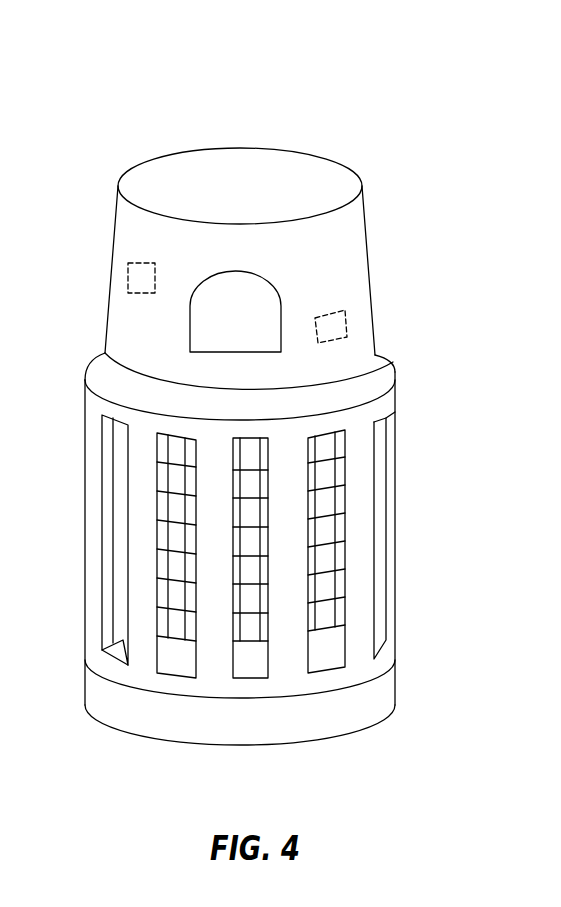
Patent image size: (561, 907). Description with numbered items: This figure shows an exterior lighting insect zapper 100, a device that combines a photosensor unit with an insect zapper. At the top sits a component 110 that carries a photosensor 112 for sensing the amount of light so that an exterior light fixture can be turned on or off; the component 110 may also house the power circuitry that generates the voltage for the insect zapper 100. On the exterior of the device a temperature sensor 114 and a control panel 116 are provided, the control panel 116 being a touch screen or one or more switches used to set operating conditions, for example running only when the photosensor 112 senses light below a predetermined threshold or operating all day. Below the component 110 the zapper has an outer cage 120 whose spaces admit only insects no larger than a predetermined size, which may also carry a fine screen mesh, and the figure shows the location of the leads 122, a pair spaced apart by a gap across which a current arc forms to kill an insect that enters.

The exterior lighting insect zapper 100 is at (118, 48).
The component 110 is at (149, 175).
The photosensor 112 is at (282, 296).
The temperature sensor 114 is at (120, 277).
The control panel 116 is at (347, 318).
The outer cage 120 is at (395, 412).
The leads 122 is at (327, 550).